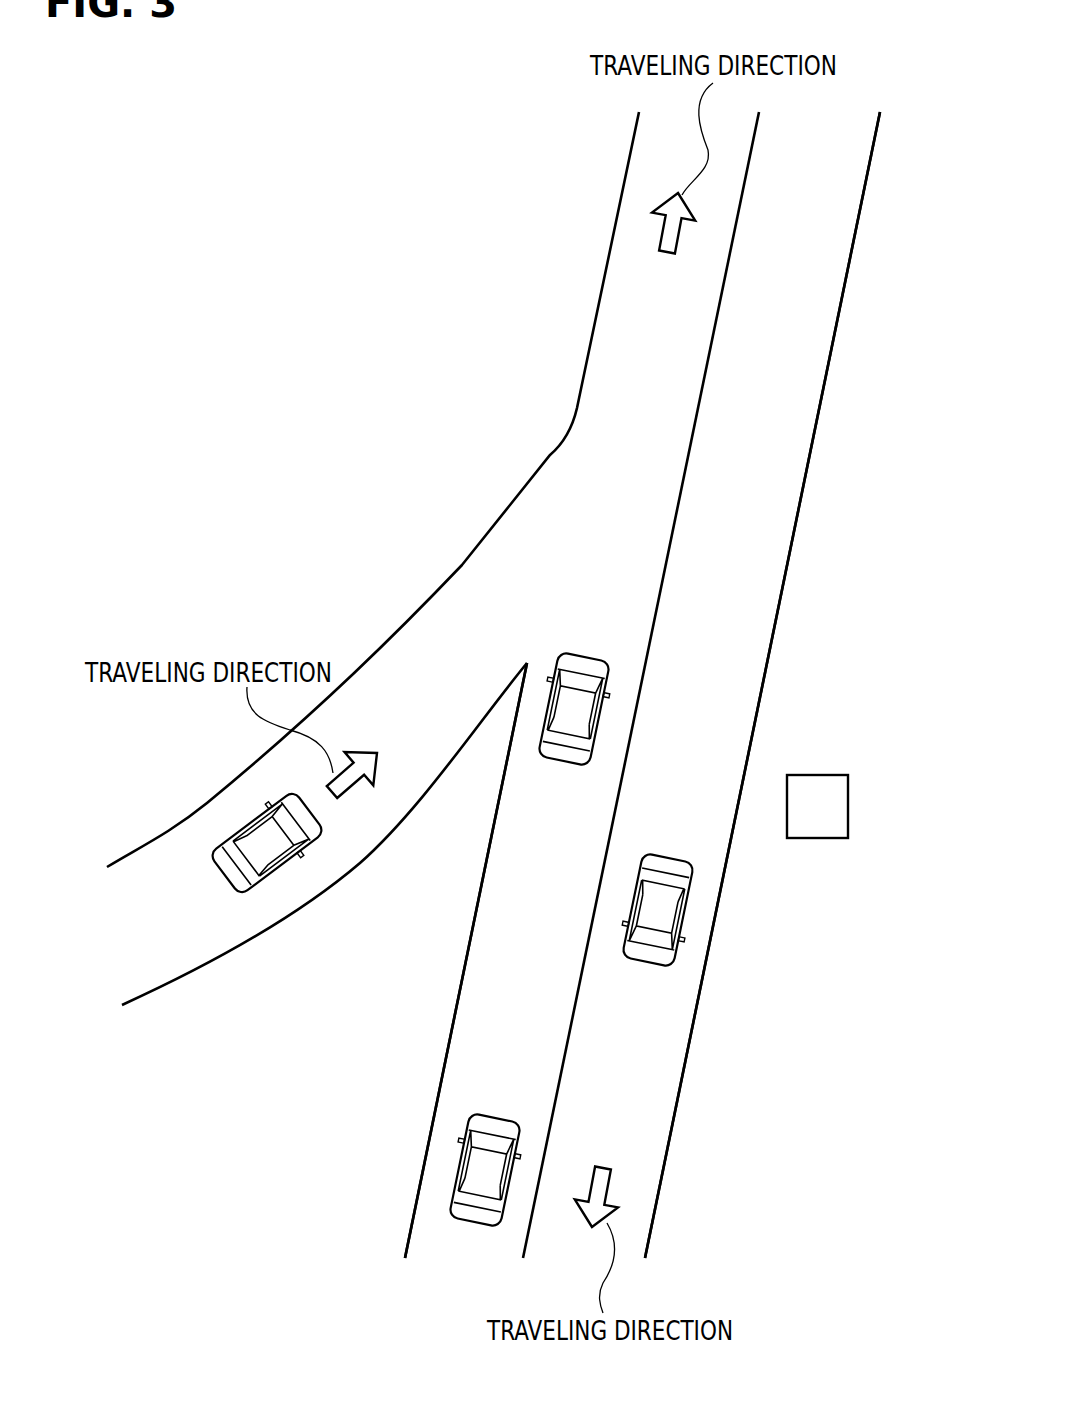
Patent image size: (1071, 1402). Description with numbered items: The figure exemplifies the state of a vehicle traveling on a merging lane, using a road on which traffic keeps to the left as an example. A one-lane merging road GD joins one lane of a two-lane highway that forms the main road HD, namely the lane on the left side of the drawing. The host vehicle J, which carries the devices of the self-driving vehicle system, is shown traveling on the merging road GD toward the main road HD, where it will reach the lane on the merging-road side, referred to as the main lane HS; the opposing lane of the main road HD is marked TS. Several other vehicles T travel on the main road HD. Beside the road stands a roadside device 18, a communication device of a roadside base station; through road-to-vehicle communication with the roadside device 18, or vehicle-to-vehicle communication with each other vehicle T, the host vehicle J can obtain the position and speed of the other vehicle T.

The roadside device 18 is at (848, 800).
The other vehicle T is at (608, 677).
The host vehicle J is at (237, 830).
The merging road GD is at (163, 877).
The main road HD is at (507, 927).
The main lane HS is at (483, 1017).
The target lane line TS is at (665, 1063).